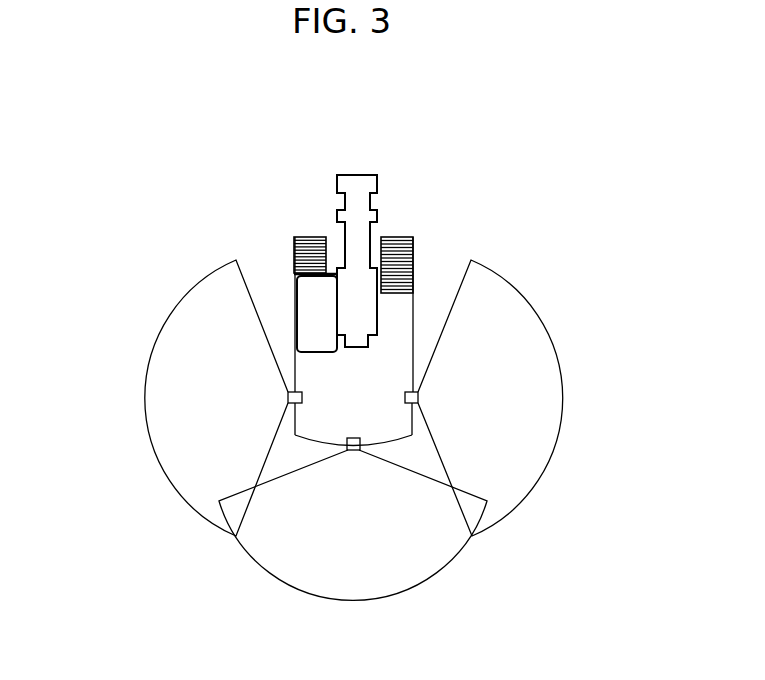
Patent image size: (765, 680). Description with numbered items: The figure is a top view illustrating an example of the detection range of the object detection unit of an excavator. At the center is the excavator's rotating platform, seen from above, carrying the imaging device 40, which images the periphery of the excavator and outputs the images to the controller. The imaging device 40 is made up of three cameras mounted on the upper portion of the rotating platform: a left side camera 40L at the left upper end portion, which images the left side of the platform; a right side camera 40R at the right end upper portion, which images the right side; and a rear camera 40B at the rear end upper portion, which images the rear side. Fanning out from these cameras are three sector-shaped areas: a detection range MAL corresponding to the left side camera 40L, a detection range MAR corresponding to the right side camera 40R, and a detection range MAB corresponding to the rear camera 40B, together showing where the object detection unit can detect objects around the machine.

The imaging device 40 is at (468, 93).
The left side camera 40L is at (294, 392).
The rear camera 40B is at (353, 438).
The right side camera 40R is at (413, 392).
The detection range MAL is at (147, 398).
The detection range MAR is at (556, 362).
The detection range MAB is at (365, 600).